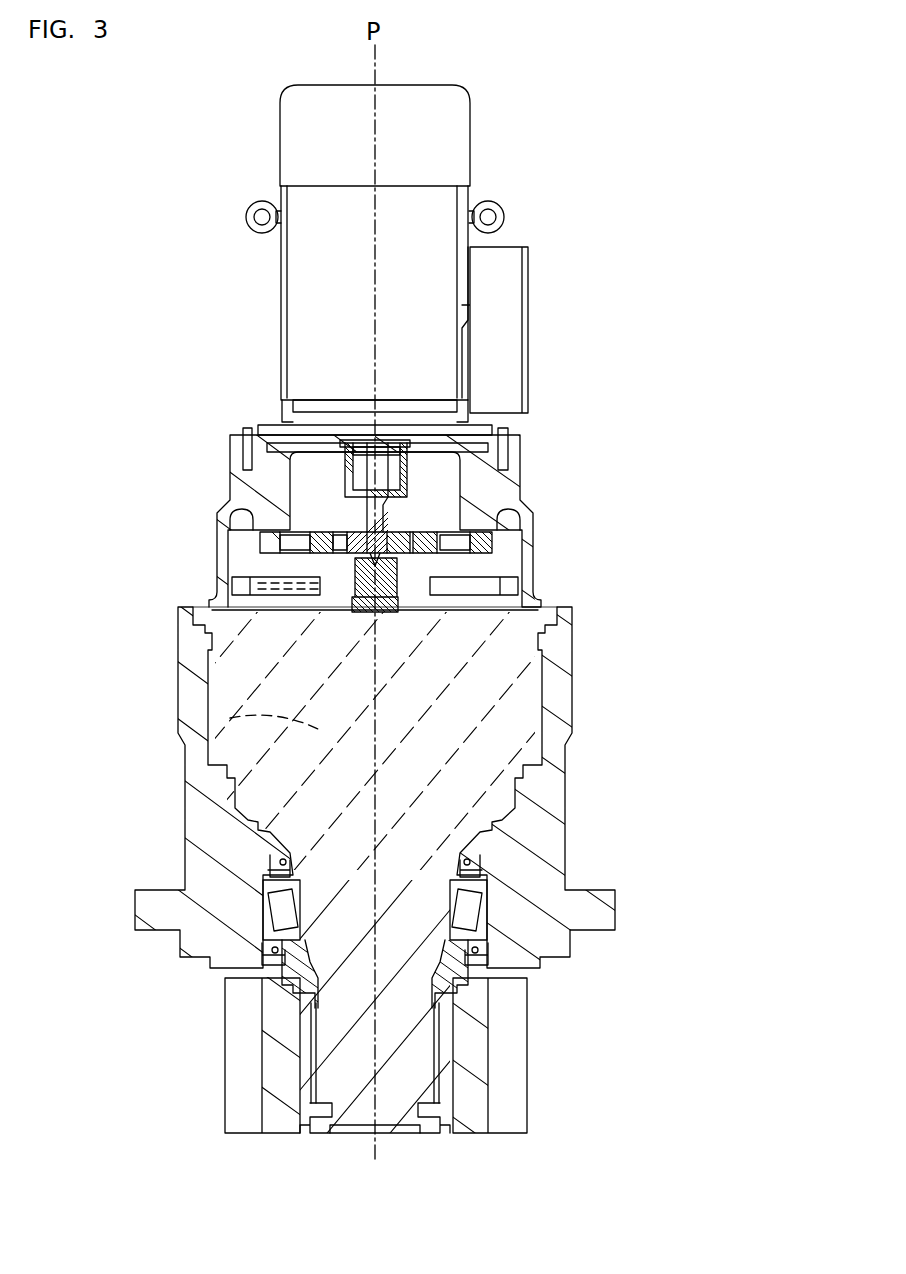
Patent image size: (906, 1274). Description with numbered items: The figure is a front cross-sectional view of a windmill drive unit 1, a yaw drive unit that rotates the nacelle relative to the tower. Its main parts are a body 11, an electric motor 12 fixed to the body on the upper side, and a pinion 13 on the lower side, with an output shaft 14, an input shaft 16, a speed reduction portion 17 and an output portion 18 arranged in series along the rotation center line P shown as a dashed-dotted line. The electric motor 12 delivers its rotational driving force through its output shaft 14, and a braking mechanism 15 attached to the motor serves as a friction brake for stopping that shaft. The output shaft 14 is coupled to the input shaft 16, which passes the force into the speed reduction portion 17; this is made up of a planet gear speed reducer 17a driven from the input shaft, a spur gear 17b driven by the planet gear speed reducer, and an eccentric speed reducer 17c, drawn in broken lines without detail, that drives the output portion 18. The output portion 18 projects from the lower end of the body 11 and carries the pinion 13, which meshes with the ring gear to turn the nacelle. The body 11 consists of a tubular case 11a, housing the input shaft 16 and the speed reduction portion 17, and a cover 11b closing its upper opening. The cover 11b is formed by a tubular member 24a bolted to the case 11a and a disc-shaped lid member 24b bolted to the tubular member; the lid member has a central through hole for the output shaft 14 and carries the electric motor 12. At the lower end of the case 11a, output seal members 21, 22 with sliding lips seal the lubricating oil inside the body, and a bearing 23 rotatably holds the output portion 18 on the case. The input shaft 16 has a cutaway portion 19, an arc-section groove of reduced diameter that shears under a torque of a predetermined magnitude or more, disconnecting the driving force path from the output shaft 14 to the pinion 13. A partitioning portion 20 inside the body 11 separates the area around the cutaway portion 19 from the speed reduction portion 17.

The windmill drive unit 1 is at (612, 205).
The body 11 is at (685, 533).
The case 11a is at (578, 667).
The cover 11b is at (540, 572).
The electric motor 12 is at (305, 283).
The pinion 13 is at (515, 1058).
The output shaft 14 is at (403, 467).
The braking mechanism 15 is at (292, 120).
The input shaft 16 is at (345, 500).
The speed reduction portion 17 is at (537, 528).
The planet gear speed reducer 17a is at (255, 547).
The spur gear 17b is at (240, 587).
The eccentric speed reducer 17c is at (230, 718).
The output portion 18 is at (355, 1066).
The cutaway portion 19 is at (390, 510).
The partitioning portion 20 is at (440, 562).
The output seal member 21 is at (483, 873).
The output seal member 22 is at (492, 945).
The bearing 23 is at (260, 952).
The tubular member 24a is at (220, 563).
The lid member 24b is at (300, 445).